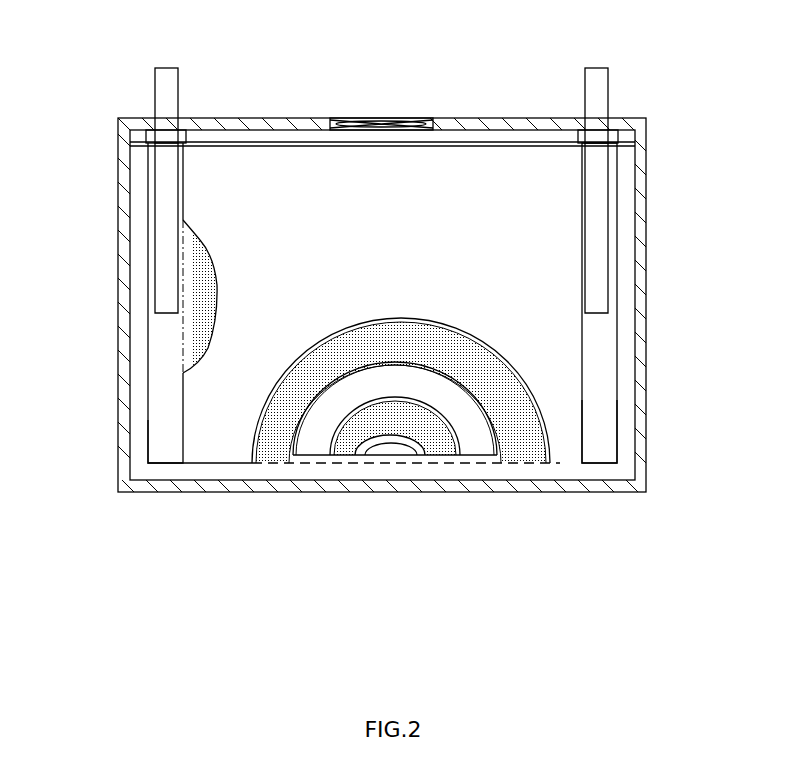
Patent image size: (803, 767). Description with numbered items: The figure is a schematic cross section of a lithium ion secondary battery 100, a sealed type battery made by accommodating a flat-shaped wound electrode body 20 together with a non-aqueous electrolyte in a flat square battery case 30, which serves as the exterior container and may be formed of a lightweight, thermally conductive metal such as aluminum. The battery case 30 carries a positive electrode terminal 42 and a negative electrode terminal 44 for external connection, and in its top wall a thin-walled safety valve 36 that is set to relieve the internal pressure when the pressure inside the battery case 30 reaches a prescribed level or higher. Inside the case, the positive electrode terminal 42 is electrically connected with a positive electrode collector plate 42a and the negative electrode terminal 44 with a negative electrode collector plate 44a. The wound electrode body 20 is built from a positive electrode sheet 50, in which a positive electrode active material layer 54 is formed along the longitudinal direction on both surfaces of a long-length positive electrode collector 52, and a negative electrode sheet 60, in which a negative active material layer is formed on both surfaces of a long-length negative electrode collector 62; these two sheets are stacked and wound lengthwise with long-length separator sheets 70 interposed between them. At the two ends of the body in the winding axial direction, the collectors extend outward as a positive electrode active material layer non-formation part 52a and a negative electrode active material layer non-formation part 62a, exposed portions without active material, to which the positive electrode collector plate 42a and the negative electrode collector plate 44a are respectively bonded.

The lithium ion secondary battery 100 is at (647, 85).
The wound electrode body 20 is at (275, 170).
The battery case 30 is at (645, 223).
The safety valve 36 is at (379, 118).
The positive electrode terminal 42 is at (165, 68).
The positive electrode collector plate 42a is at (168, 207).
The negative electrode terminal 44 is at (595, 68).
The negative electrode collector plate 44a is at (597, 175).
The positive electrode sheet 50 is at (277, 448).
The positive electrode collector 52 is at (147, 365).
The positive electrode active material layer non-formation part 52a is at (163, 440).
The positive electrode active material layer 54 is at (202, 273).
The negative electrode sheet 60 is at (350, 448).
The negative electrode collector 62 is at (617, 327).
The negative electrode active material layer non-formation part 62a is at (603, 370).
The separator sheet 70 is at (218, 400).